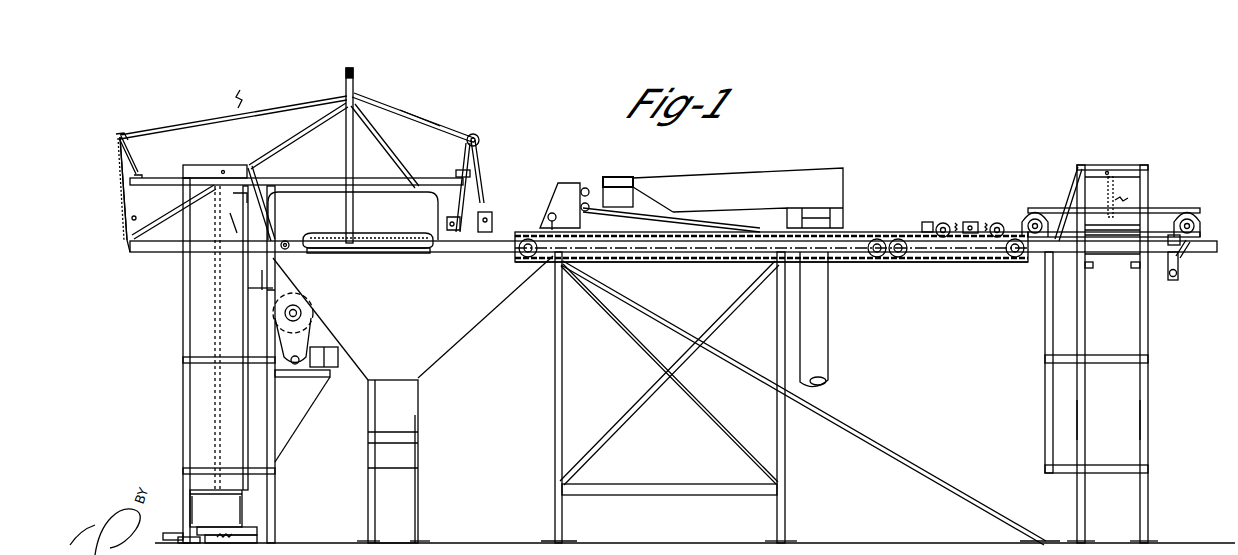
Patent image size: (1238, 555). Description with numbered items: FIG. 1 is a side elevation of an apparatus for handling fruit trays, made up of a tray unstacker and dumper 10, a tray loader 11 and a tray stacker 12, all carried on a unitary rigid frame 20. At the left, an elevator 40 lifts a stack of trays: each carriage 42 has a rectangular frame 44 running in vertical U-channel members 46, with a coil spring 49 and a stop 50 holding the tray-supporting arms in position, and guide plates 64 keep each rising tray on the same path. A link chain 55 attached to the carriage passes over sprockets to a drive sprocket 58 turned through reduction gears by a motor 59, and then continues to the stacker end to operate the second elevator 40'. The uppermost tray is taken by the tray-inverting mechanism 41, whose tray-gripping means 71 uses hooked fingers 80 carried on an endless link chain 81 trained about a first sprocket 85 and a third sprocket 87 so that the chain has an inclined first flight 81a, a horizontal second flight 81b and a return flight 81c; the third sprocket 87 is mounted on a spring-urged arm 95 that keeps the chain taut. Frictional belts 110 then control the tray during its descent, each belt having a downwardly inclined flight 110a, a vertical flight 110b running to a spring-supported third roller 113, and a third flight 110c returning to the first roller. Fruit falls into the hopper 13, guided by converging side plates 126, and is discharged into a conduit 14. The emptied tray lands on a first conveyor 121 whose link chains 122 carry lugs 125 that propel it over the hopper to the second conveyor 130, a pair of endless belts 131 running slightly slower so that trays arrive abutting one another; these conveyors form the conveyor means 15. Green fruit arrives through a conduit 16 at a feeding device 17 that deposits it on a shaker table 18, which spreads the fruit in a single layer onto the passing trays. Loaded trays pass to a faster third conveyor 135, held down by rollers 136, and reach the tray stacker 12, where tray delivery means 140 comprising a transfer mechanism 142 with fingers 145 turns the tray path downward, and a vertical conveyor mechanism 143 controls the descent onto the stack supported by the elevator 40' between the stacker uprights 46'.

The tray unstacker and dumper 10 is at (153, 118).
The tray loader 11 is at (578, 175).
The tray stacker 12 is at (1118, 152).
The hopper 13 is at (430, 356).
The conduit 14 is at (408, 402).
The conveyor means 15 is at (528, 225).
The conduit 16 is at (822, 300).
The feeding device 17 is at (677, 178).
The shaker table 18 is at (616, 185).
The frame 20 is at (153, 254).
The elevator 40 is at (229, 511).
The elevator 40' is at (1111, 201).
The tray-inverting mechanism 41 is at (292, 108).
The carriages 42 is at (252, 528).
The rectangular frame 44 is at (190, 488).
The U-channel members 46 is at (201, 360).
The upright frame 46' is at (1135, 418).
The coil spring 49 is at (245, 539).
The stop 50 is at (240, 520).
The link chain 55 is at (215, 385).
The drive sprocket 58 is at (316, 310).
The motor 59 is at (338, 356).
The guide plates 64 is at (262, 278).
The tray-gripping means 71 is at (240, 90).
The tray-gripping fingers 80 is at (232, 118).
The endless link chain 81 is at (122, 185).
The first flight 81a is at (285, 140).
The second flight 81b is at (206, 133).
The cover side member 81c is at (125, 205).
The first sprocket 85 is at (142, 225).
The third sprocket 87 is at (130, 141).
The arm 95 is at (135, 160).
The belts 110 is at (390, 106).
The downwardly inclined flight 110a is at (383, 150).
The substantially vertical flight 110b is at (485, 160).
The third flight 110c is at (412, 108).
The third roller 113 is at (478, 134).
The first conveyor 121 is at (400, 210).
The link chains 122 is at (392, 252).
The lugs 125 is at (350, 236).
The side plates 126 is at (412, 195).
The second conveyor 130 is at (548, 264).
The endless belts 131 is at (652, 258).
The third conveyor 135 is at (905, 240).
The rollers 136 is at (999, 222).
The tray delivery means 140 is at (1150, 338).
The transfer mechanism 142 is at (1057, 207).
The vertical conveyor mechanism 143 is at (1183, 265).
The fingers 145 is at (1105, 200).